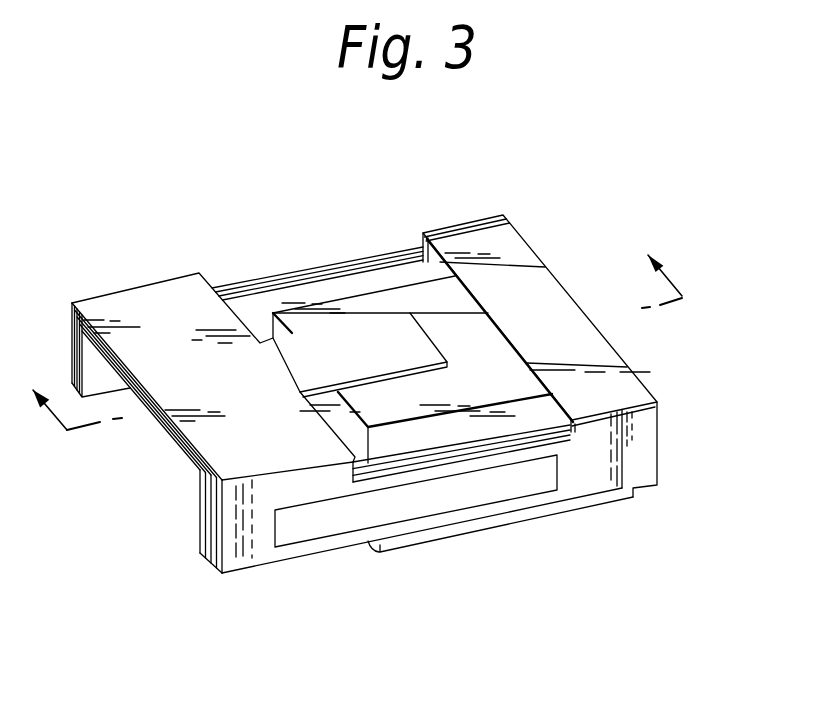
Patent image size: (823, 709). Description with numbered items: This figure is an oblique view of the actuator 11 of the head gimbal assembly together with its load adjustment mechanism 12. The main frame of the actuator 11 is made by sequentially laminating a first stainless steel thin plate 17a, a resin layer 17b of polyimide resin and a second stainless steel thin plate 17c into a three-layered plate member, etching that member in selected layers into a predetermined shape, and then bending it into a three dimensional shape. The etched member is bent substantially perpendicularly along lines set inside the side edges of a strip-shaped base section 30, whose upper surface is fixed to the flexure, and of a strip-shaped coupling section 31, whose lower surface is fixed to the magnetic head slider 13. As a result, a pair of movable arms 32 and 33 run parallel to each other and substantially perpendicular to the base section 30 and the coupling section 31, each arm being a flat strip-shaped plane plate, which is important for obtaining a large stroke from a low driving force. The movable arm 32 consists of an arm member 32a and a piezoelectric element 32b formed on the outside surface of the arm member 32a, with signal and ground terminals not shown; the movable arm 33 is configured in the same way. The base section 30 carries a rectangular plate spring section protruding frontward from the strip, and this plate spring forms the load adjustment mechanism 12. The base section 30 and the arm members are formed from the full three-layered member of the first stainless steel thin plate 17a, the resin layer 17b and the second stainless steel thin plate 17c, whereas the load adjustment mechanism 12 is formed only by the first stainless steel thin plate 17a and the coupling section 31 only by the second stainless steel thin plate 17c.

The actuator 11 is at (423, 186).
The load adjustment mechanism 12 is at (360, 340).
The magnetic head slider 13 is at (425, 302).
The base section 30 is at (171, 314).
The coupling section 31 is at (522, 264).
The movable arm 32 is at (260, 553).
The arm member 32a is at (510, 507).
The piezoelectric element 32b is at (430, 498).
The movable arm 33 is at (248, 310).
The first stainless steel thin plate 17a is at (197, 470).
The resin layer 17b is at (177, 448).
The second stainless steel thin plate 17c is at (157, 428).